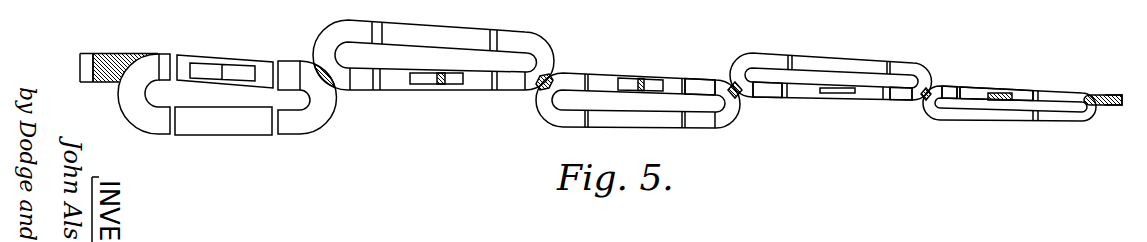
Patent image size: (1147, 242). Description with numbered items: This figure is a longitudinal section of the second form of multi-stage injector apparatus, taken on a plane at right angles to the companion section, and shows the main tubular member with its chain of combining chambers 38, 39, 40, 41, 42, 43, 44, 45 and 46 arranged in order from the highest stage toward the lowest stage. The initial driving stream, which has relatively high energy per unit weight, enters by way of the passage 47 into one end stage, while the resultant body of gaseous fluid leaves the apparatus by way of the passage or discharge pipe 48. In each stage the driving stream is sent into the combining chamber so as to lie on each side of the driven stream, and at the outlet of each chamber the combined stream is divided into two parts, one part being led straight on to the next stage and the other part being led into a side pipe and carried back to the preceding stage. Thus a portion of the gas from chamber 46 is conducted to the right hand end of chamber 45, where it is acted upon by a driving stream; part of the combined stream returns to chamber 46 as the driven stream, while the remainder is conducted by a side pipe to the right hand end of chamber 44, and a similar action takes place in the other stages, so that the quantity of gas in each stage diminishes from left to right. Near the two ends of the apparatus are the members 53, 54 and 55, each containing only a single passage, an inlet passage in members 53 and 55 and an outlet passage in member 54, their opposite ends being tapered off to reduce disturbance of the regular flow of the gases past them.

The combining chamber 38 is at (955, 93).
The combining chamber 39 is at (898, 92).
The combining chamber 40 is at (771, 88).
The combining chamber 41 is at (672, 82).
The combining chamber 42 is at (603, 82).
The combining chamber 43 is at (484, 85).
The combining chamber 44 is at (366, 78).
The combining chamber 45 is at (286, 68).
The combining chamber 46 is at (182, 66).
The passage 47 is at (1117, 106).
The discharge pipe 48 is at (80, 63).
The end member 53 is at (1098, 95).
The end member 54 is at (122, 60).
The end member 55 is at (1003, 93).